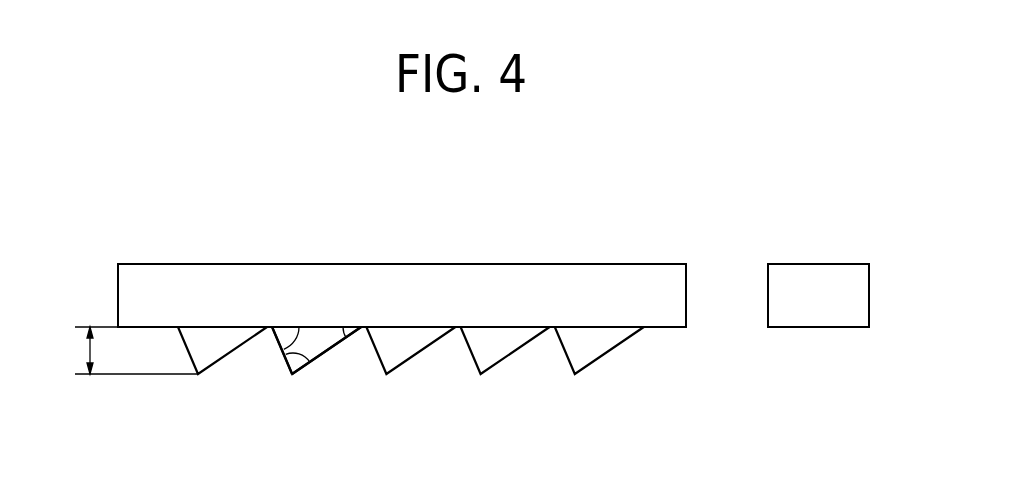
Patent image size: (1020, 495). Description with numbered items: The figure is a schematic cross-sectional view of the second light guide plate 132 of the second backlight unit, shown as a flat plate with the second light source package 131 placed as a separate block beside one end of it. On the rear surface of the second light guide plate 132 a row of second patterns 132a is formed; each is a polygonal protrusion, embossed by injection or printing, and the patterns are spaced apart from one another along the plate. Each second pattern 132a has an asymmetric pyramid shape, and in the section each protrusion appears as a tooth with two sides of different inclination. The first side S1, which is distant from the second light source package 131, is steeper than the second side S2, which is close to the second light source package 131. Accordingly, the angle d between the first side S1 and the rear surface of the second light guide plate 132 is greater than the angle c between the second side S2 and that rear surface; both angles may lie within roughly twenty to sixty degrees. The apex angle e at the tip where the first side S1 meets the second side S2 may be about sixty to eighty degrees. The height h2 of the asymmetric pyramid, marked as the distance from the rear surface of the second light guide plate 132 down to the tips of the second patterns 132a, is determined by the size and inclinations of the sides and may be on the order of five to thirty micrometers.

The second light guide plate 132 is at (427, 229).
The second light source package 131 is at (818, 264).
The second patterns 132a is at (466, 402).
The height of the asymmetric pyramid h2 is at (124, 350).
The angle between the first side and the rear surface d is at (281, 345).
The apex angle of the asymmetric pyramid e is at (297, 378).
The angle between the second side and the rear surface c is at (354, 346).
The first side S1 is at (281, 350).
The second side S2 is at (328, 350).